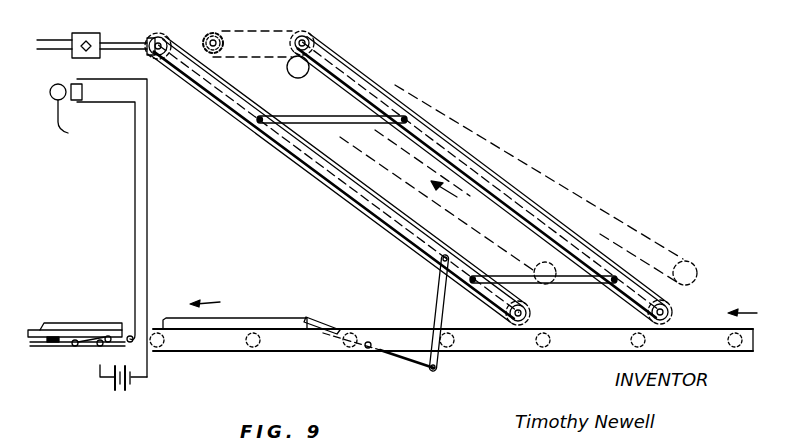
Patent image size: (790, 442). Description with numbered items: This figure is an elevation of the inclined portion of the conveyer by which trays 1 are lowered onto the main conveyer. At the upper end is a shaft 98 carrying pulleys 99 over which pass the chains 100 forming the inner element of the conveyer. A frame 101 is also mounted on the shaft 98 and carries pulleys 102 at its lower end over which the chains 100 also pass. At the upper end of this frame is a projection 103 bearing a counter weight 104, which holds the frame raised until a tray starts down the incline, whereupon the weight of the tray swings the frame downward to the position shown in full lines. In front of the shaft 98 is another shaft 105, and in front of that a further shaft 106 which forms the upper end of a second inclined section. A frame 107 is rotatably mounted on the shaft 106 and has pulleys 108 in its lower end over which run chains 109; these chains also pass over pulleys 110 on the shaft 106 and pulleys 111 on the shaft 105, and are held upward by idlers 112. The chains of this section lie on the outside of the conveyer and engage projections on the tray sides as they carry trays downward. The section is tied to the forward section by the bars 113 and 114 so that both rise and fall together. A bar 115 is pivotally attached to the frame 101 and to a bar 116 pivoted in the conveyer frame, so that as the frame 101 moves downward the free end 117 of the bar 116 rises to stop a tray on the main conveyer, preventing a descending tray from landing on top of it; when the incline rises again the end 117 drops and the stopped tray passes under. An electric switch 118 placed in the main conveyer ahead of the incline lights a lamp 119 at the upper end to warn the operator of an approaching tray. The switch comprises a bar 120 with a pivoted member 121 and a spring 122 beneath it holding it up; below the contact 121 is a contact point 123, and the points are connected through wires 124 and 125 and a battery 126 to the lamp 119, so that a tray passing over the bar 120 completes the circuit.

The tray 1 is at (237, 322).
The shaft 98 is at (167, 37).
The pulleys 99 is at (150, 37).
The chains 100 is at (230, 90).
The frame 101 is at (303, 158).
The pulleys 102 is at (530, 312).
The projection 103 is at (110, 50).
The counter weight 104 is at (77, 33).
The shaft 105 is at (217, 32).
The shaft 106 is at (310, 43).
The frame 107 is at (440, 147).
The pulleys 108 is at (672, 310).
The chains 109 is at (607, 257).
The pulleys 110 is at (298, 32).
The pulleys 111 is at (212, 28).
The idlers 112 is at (302, 77).
The bar 113 is at (350, 118).
The bar 114 is at (577, 283).
The bar 115 is at (432, 299).
The bar 116 is at (400, 358).
The free end 117 is at (320, 320).
The electric switch 118 is at (73, 347).
The lamp 119 is at (76, 114).
The bar 120 is at (62, 323).
The member 121 is at (77, 347).
The spring 122 is at (52, 345).
The contact point 123 is at (100, 348).
The wire 124 is at (135, 243).
The wire 125 is at (150, 243).
The battery 126 is at (128, 388).